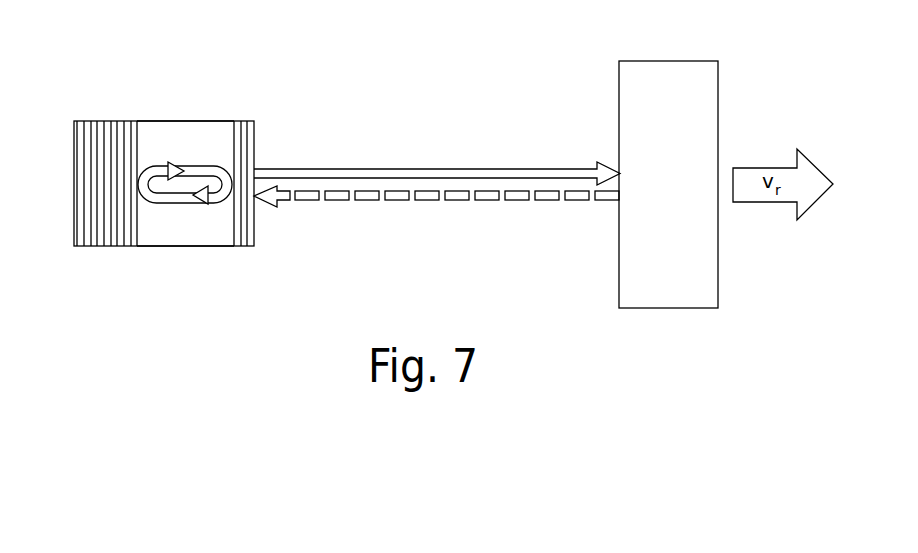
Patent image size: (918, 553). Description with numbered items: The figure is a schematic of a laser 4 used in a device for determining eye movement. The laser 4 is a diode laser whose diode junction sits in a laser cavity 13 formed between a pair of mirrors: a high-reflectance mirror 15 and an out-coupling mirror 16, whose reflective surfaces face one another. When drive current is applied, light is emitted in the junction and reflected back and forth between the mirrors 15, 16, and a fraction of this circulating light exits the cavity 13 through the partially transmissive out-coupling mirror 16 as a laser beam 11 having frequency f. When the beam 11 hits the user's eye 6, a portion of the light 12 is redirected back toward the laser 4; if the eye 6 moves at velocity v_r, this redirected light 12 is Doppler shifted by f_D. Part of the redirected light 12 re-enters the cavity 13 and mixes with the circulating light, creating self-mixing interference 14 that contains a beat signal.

The laser 4 is at (134, 103).
The user's eye 6 is at (674, 192).
The laser beam 11 is at (295, 168).
The redirected light 12 is at (315, 200).
The laser cavity 13 is at (195, 142).
The self-mixing interference 14 is at (182, 193).
The high-reflectance mirror 15 is at (108, 233).
The out-coupling mirror 16 is at (253, 122).